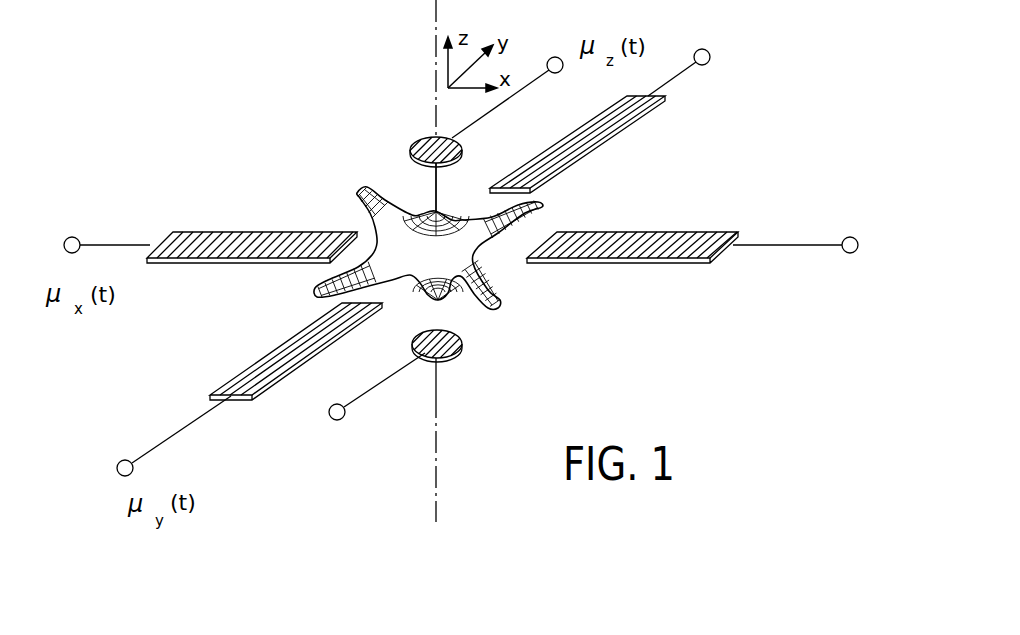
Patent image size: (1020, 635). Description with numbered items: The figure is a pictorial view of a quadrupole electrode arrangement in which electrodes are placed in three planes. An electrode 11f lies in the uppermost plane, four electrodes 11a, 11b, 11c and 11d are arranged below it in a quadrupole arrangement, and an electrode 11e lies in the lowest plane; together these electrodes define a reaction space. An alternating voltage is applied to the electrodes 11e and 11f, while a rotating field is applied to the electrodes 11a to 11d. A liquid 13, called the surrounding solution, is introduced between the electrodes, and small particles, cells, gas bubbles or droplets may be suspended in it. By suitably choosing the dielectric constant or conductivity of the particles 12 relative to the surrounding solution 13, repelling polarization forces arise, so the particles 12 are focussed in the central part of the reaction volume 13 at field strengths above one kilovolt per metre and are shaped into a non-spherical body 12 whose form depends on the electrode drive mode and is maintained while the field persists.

The electrode 11a is at (271, 369).
The electrode 11b is at (232, 247).
The electrode 11c is at (598, 122).
The electrode 11d is at (677, 243).
The electrode 11e is at (458, 353).
The electrode 11f is at (413, 145).
The particles 12 is at (445, 255).
The liquid 13 is at (458, 187).